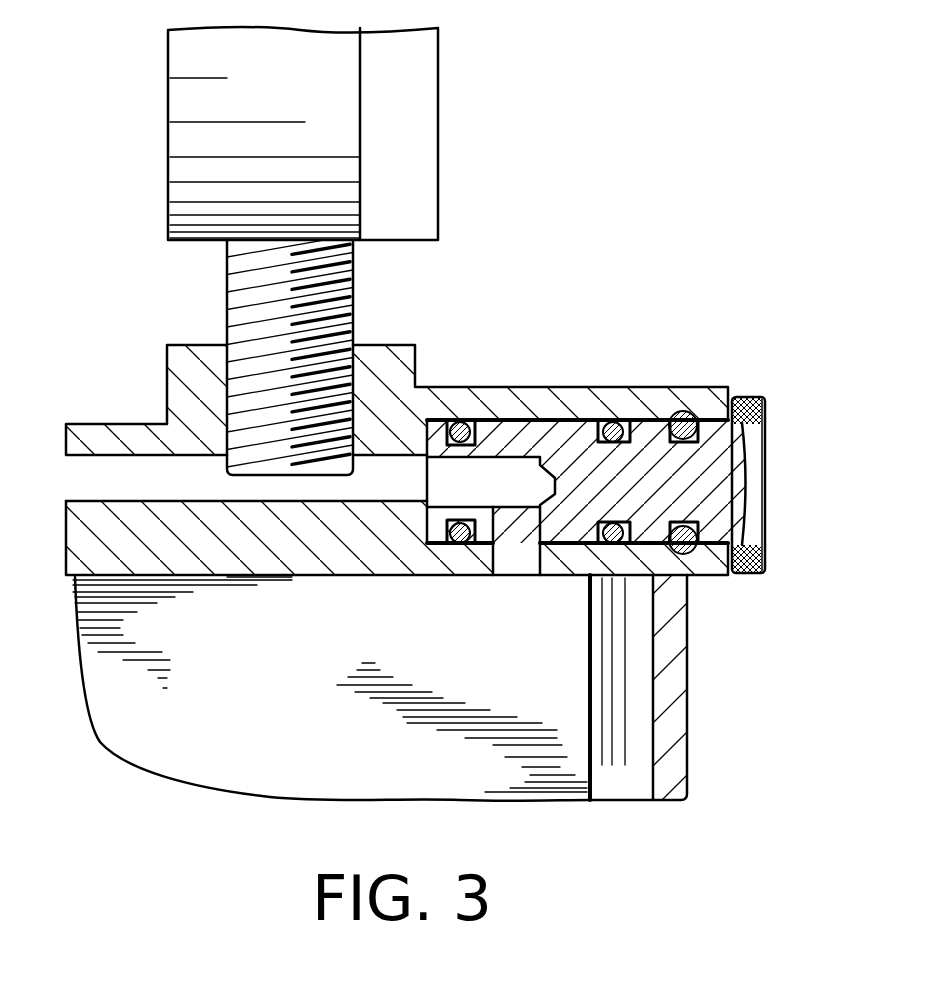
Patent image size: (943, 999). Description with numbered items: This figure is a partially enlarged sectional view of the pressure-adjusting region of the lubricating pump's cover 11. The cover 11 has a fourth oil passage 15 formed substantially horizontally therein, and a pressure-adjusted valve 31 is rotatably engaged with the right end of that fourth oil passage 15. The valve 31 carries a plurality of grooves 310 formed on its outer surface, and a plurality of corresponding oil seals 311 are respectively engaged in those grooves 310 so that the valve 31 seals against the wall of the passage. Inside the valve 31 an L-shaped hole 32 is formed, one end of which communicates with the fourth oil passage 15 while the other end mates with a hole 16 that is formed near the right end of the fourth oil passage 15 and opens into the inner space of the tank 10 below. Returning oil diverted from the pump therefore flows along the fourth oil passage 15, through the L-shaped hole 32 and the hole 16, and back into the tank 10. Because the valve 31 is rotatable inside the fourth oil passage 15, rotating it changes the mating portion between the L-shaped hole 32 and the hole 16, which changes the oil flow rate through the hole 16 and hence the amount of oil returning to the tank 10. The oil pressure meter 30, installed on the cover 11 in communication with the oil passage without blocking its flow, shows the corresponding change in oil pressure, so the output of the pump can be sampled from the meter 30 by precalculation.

The tank 10 is at (668, 708).
The cover 11 is at (534, 398).
The fourth oil passage 15 is at (172, 495).
The hole 16 is at (493, 548).
The oil pressure meter 30 is at (422, 128).
The pressure-adjusted valve 31 is at (752, 495).
The L-shaped hole 32 is at (482, 458).
The grooves 310 is at (692, 517).
The oil seals 311 is at (690, 548).